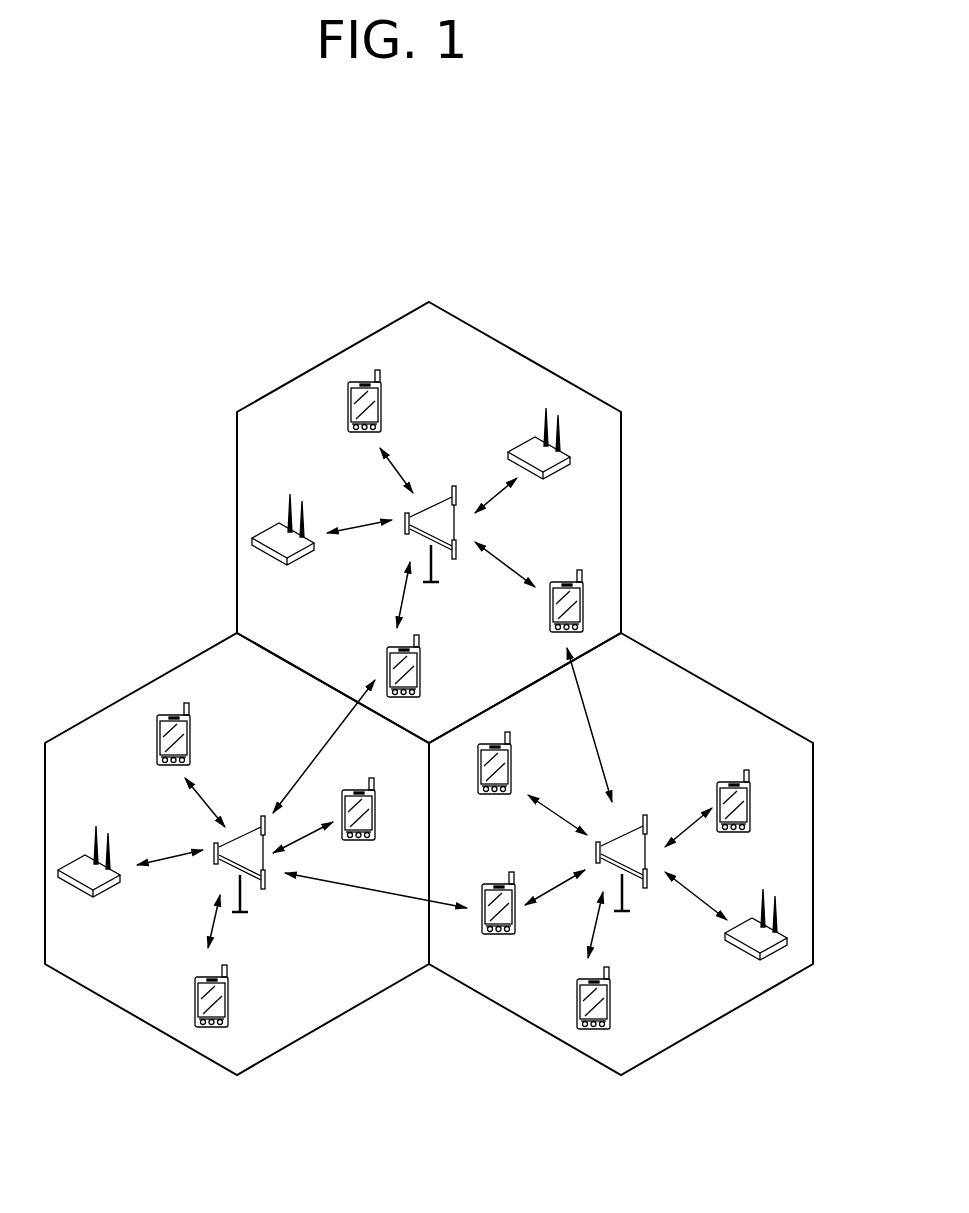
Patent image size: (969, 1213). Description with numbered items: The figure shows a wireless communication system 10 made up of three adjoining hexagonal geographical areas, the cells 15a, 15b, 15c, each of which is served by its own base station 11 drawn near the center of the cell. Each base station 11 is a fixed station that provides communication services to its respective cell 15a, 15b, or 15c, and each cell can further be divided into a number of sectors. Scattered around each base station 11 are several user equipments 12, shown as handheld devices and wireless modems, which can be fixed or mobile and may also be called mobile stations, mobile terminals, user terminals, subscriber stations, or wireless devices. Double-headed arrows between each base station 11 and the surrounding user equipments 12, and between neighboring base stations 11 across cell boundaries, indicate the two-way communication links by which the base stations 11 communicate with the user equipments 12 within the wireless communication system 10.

The wireless communication system 10 is at (429, 688).
The base station 11 is at (442, 497).
The user equipment 12 is at (381, 404).
The cell 15a is at (622, 512).
The cell 15b is at (738, 698).
The cell 15c is at (116, 700).